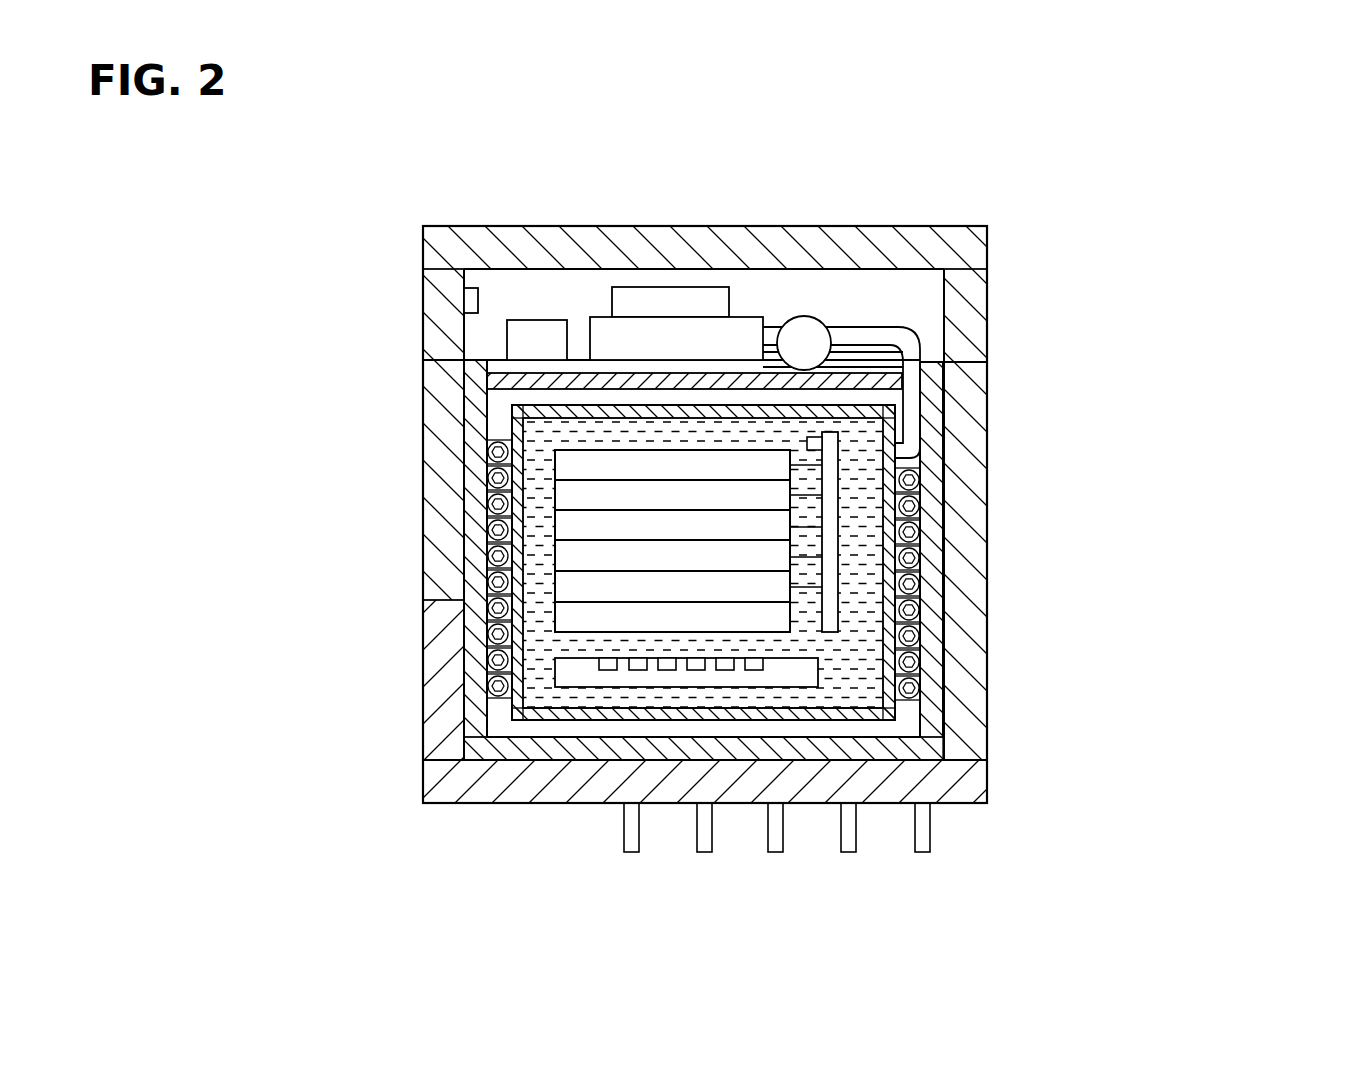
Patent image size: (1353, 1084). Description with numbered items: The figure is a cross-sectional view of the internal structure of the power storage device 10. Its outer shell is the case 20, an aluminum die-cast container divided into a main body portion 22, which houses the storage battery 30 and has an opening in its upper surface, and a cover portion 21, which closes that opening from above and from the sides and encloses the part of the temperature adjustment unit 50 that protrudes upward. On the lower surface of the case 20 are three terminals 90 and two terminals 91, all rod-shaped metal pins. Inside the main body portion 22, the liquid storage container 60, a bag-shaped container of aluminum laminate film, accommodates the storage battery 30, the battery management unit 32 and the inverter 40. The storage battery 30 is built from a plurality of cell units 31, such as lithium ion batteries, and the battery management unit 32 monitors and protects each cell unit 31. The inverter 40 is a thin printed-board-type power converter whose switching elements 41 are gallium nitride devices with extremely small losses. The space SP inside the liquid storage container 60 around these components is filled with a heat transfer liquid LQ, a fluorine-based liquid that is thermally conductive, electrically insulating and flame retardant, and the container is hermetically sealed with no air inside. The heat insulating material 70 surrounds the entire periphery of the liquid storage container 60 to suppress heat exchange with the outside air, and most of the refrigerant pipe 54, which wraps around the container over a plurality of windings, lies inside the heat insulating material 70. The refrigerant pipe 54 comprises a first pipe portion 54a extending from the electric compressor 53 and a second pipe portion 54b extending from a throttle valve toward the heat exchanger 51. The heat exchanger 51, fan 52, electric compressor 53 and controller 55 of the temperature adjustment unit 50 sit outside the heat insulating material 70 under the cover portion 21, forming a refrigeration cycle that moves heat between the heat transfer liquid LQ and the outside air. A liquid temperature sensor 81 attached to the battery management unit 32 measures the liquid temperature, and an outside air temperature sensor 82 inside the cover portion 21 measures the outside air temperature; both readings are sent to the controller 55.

The power storage device 10 is at (1200, 232).
The case 20 is at (617, 514).
The cover portion 21 is at (437, 298).
The main body portion 22 is at (437, 418).
The storage battery 30 is at (572, 587).
The cell units 31 is at (572, 613).
The battery management unit 32 is at (828, 537).
The inverter 40 is at (573, 675).
The switching elements 41 is at (608, 666).
The temperature adjustment unit 50 is at (750, 254).
The heat exchanger 51 is at (752, 340).
The fan 52 is at (678, 302).
The electric compressor 53 is at (806, 333).
The refrigerant pipe 54 is at (487, 446).
The first pipe portion 54a is at (920, 333).
The second pipe portion 54b is at (910, 398).
The controller 55 is at (538, 330).
The liquid storage container 60 is at (940, 803).
The heat insulating material 70 is at (578, 380).
The liquid temperature sensor 81 is at (815, 443).
The outside air temperature sensor 82 is at (471, 300).
The terminals 90 is at (632, 855).
The terminals 91 is at (849, 855).
The heat transfer liquid LQ is at (850, 642).
The space SP is at (843, 690).